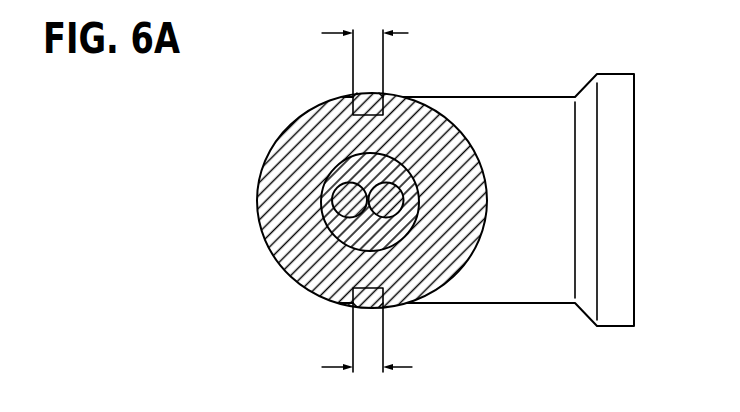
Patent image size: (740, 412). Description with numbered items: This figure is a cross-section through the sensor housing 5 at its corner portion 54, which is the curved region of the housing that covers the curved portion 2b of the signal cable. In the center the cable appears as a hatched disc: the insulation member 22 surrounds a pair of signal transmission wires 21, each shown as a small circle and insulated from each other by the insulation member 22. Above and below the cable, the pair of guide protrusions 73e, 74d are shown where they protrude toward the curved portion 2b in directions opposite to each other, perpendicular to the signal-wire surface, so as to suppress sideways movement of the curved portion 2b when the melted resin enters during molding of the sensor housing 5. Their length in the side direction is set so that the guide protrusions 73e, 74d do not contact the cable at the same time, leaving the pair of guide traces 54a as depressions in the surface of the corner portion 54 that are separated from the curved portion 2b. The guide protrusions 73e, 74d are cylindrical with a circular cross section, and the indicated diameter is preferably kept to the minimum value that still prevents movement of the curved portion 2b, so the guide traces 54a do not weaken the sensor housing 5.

The sensor housing 5 is at (283, 143).
The signal transmission wires 21 is at (333, 197).
The insulation member 22 is at (321, 204).
The curved portion 2b is at (351, 247).
The corner portion 54 is at (466, 141).
The guide traces 54a is at (351, 93).
The guide protrusion 74d is at (384, 85).
The guide protrusion 73e is at (340, 302).